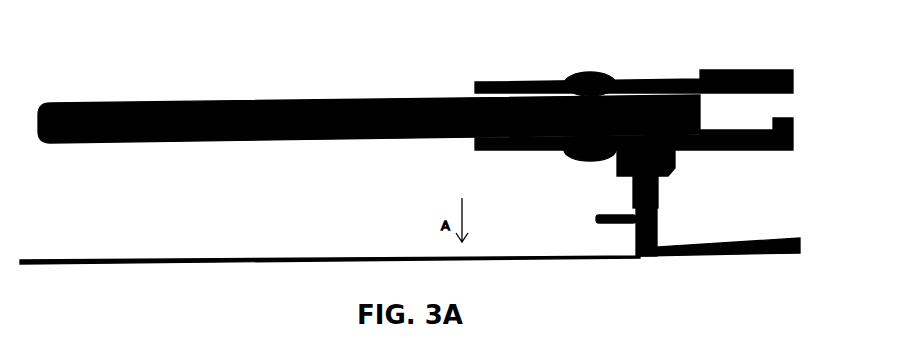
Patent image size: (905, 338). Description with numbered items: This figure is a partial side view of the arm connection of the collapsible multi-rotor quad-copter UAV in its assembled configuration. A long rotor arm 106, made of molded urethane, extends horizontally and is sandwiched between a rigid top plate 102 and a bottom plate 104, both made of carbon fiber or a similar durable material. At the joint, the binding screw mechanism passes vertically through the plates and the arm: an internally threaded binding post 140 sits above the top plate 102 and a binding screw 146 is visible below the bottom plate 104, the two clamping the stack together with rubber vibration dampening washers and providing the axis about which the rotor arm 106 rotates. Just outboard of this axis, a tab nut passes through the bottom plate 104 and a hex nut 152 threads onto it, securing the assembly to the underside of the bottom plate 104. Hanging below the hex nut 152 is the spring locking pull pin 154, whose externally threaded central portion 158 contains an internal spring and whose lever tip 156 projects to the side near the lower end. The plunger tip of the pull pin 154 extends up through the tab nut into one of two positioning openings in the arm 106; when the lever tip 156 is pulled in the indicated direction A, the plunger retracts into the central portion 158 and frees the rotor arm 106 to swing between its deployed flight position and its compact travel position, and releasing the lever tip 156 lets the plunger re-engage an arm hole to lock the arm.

The top plate 102 is at (732, 69).
The bottom plate 104 is at (760, 151).
The rotor arm 106 is at (267, 143).
The binding post 140 is at (583, 73).
The binding screw 146 is at (575, 161).
The hex nut 152 is at (675, 167).
The pull pin 154 is at (660, 255).
The lever tip 156 is at (597, 220).
The central portion 158 is at (658, 193).